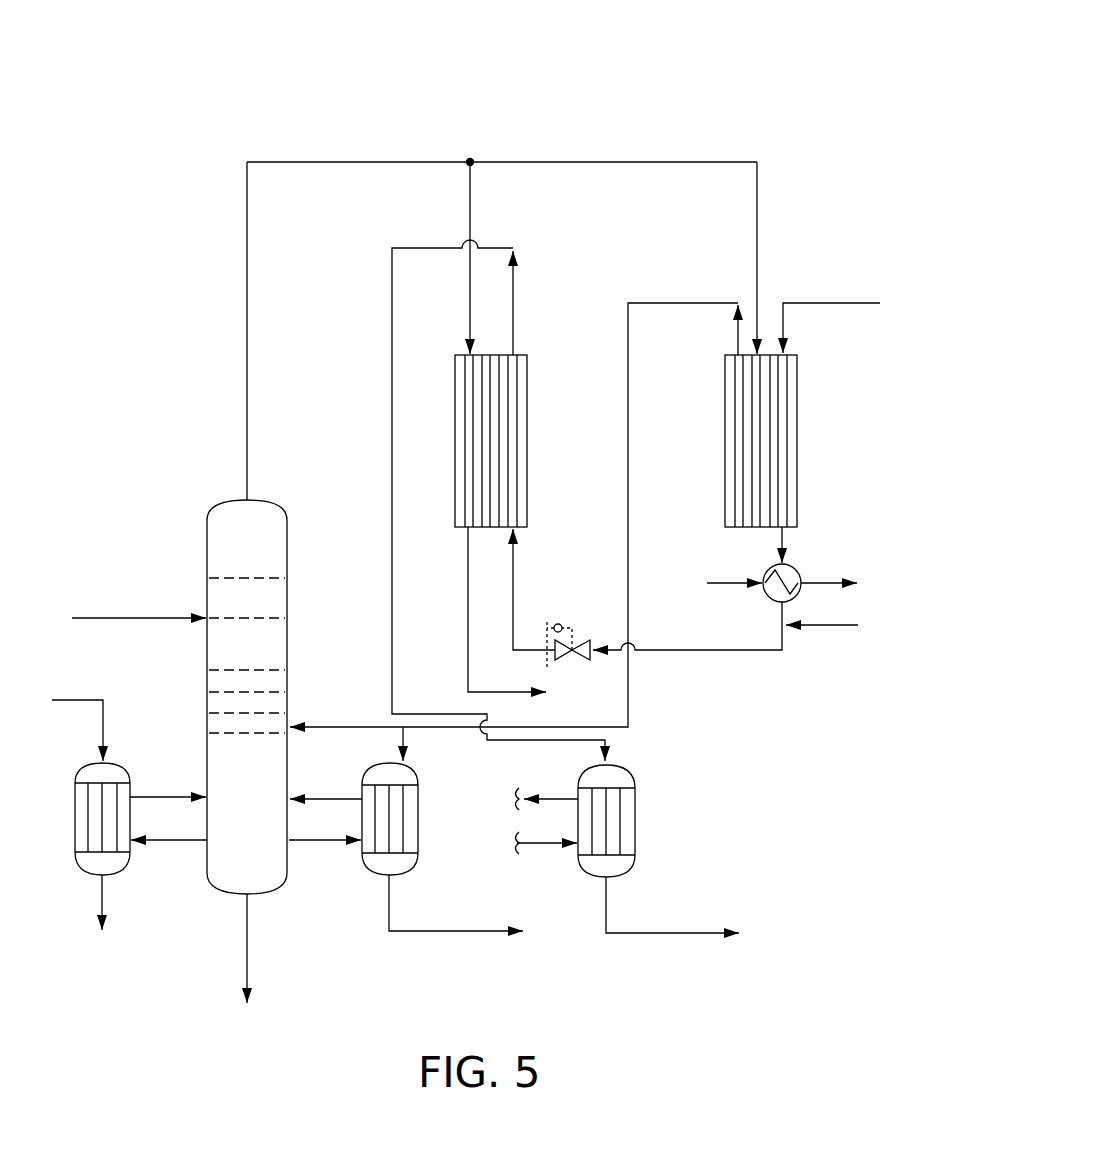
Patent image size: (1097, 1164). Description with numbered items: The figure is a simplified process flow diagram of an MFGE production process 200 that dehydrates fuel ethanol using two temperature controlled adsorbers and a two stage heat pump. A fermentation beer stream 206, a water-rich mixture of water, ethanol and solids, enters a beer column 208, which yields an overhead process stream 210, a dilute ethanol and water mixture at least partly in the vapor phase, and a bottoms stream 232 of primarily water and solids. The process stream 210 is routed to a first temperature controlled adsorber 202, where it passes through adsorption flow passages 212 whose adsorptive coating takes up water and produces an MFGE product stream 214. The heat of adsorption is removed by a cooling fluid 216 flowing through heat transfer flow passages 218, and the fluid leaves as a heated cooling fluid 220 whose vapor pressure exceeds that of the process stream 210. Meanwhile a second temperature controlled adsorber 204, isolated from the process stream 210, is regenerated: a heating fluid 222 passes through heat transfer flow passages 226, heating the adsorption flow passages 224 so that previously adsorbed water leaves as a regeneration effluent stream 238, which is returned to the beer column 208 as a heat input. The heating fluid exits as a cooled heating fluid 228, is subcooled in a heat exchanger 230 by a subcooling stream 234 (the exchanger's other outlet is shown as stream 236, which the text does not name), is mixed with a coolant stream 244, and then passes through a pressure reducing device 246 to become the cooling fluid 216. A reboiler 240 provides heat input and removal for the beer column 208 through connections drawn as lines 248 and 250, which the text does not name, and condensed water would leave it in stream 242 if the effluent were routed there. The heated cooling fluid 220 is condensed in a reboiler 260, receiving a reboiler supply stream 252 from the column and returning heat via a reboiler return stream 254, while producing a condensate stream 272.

The MFGE production process 200 is at (838, 72).
The first temperature controlled adsorber 202 is at (527, 447).
The second temperature controlled adsorber 204 is at (797, 447).
The fermentation beer stream 206 is at (155, 618).
The beer column 208 is at (210, 515).
The process stream 210 is at (358, 162).
The adsorption flow passages 212 is at (468, 368).
The MFGE product stream 214 is at (468, 638).
The cooling fluid 216 is at (515, 590).
The heat transfer flow passages 218 is at (513, 380).
The heated cooling fluid 220 is at (390, 296).
The heating fluid 222 is at (857, 303).
The adsorption flow passages 224 is at (735, 368).
The heat transfer flow passages 226 is at (783, 382).
The cooled heating fluid 228 is at (778, 542).
The heat exchanger 230 is at (800, 567).
The bottoms stream 232 is at (247, 950).
The subcooling stream 234 is at (710, 583).
The coolant outlet stream 236 is at (836, 583).
The regeneration effluent stream 238 is at (686, 303).
The reboiler 240 is at (418, 818).
The stream 242 is at (415, 931).
The coolant stream 244 is at (847, 625).
The pressure reducing device 246 is at (586, 661).
The condenser return stream 248 is at (322, 799).
The column side draw stream 250 is at (325, 842).
The reboiler supply stream 252 is at (545, 845).
The reboiler return stream 254 is at (545, 799).
The reboiler 260 is at (635, 820).
The condensate stream 272 is at (650, 933).